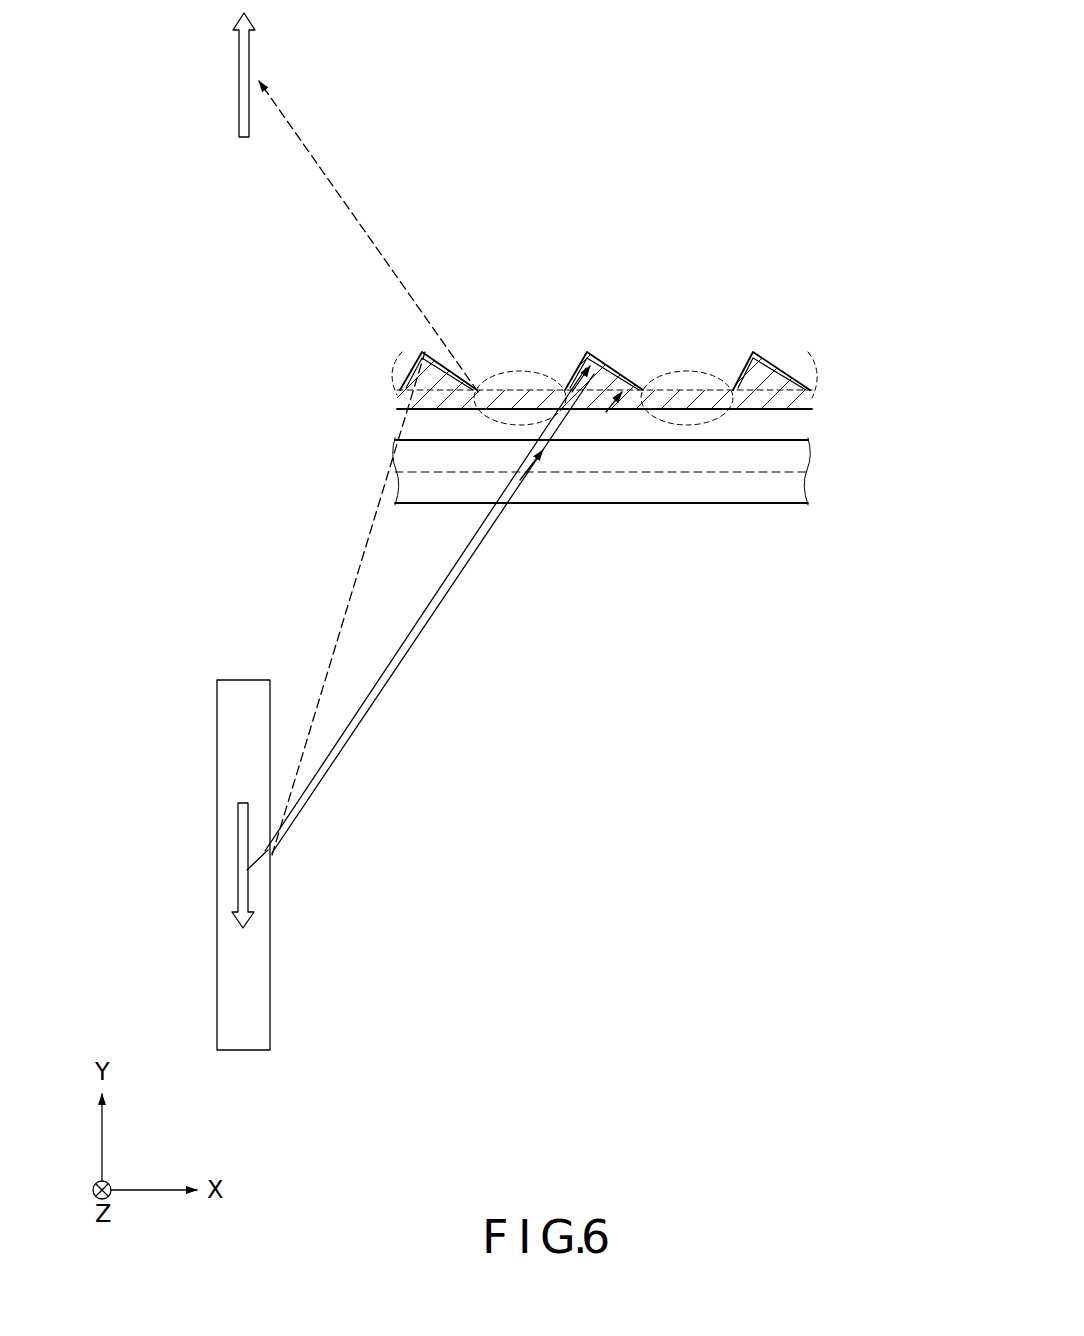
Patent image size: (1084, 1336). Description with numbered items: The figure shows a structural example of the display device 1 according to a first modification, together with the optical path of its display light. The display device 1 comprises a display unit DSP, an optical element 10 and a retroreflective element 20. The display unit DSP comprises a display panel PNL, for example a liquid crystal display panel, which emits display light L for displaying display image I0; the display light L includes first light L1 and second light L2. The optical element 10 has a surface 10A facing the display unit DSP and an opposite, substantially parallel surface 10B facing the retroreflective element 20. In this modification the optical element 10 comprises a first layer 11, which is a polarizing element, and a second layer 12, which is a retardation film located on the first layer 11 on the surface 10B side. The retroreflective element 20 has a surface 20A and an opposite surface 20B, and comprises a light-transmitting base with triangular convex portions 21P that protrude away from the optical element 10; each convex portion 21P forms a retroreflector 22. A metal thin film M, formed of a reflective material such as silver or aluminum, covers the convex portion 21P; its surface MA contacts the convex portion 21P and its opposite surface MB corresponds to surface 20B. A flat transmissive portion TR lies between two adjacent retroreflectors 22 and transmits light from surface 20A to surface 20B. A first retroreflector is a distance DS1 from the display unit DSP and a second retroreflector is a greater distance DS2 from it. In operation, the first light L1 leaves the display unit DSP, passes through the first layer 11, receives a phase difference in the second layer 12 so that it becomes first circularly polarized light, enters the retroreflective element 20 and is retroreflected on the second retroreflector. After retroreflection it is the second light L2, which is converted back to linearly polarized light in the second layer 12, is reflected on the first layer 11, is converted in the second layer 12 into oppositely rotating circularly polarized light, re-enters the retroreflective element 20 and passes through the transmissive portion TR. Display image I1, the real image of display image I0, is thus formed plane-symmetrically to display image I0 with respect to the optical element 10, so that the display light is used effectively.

The display device 1 is at (823, 238).
The optical element 10 is at (834, 441).
The surface 10A is at (755, 508).
The surface 10B is at (752, 436).
The first layer 11 is at (803, 487).
The second layer 12 is at (803, 457).
The retroreflective element 20 is at (834, 371).
The surface 20A is at (675, 424).
The surface 20B is at (510, 376).
The convex portion 21P is at (405, 362).
The retroreflector 22 is at (432, 347).
The transmissive portion TR is at (537, 373).
The metal thin film M is at (593, 360).
The surface MA is at (653, 397).
The surface MB is at (630, 366).
The display light L is at (477, 576).
The first light L1 is at (405, 650).
The second light L2 is at (357, 190).
The distance DS1 is at (342, 620).
The distance DS2 is at (333, 767).
The display unit DSP is at (187, 792).
The display panel PNL is at (243, 1052).
The display image I0 is at (238, 838).
The display image I1 is at (239, 60).